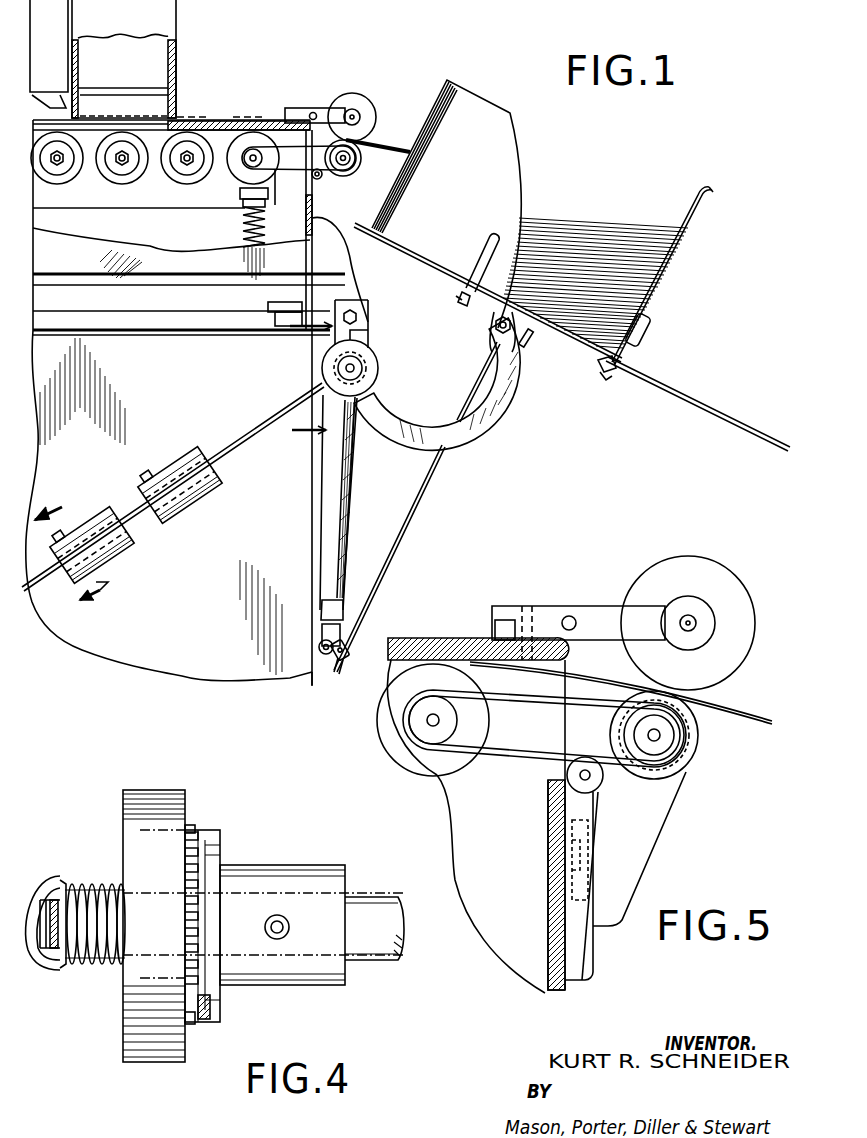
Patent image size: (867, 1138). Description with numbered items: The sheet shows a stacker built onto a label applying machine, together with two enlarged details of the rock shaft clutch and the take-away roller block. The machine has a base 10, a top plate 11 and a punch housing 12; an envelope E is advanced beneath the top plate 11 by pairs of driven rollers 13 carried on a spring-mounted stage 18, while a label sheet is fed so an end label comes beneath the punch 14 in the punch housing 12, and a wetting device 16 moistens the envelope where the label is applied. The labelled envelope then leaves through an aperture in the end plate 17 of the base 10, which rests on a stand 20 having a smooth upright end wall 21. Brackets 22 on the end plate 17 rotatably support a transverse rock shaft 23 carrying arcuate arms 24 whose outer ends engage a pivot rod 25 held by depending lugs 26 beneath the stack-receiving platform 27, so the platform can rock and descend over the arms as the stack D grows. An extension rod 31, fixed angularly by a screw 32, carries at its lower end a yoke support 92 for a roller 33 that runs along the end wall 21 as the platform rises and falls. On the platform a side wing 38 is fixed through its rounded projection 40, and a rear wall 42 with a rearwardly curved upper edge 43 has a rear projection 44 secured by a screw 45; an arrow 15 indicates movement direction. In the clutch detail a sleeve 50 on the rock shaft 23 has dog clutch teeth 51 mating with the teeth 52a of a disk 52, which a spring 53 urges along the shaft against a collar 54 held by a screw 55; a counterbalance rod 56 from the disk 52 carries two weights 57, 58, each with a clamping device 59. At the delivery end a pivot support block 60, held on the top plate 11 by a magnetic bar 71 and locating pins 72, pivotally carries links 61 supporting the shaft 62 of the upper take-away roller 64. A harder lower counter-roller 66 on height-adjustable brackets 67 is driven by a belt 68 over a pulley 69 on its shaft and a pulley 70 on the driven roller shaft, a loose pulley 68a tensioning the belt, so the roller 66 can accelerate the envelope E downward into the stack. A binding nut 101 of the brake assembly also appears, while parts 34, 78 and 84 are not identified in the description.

In FIG. 1, the base 10 is at (162, 290).
In FIG. 1, the top plate 11 is at (206, 118).
In FIG. 5, the top plate 11 is at (430, 638).
In FIG. 1, the punch housing 12 is at (152, 63).
In FIG. 1, the driven rollers 13 is at (60, 170).
In FIG. 5, the driven rollers 13 is at (400, 760).
In FIG. 1, the punch 14 is at (150, 98).
In FIG. 1, the direction arrow 15 is at (69, 555).
In FIG. 1, the wetting device 16 is at (40, 42).
In FIG. 1, the end plate 17 is at (264, 240).
In FIG. 5, the end plate 17 is at (542, 880).
In FIG. 1, the stage 18 is at (76, 197).
In FIG. 1, the cabinet or stand 20 is at (212, 680).
In FIG. 1, the upright end wall 21 is at (338, 492).
In FIG. 1, the brackets 22 is at (348, 282).
In FIG. 1, the rock shaft 23 is at (357, 368).
In FIG. 4, the rock shaft 23 is at (360, 962).
In FIG. 1, the arms 24 is at (504, 408).
In FIG. 1, the pivot rod 25 is at (492, 346).
In FIG. 1, the depending lugs 26 is at (492, 316).
In FIG. 1, the stack-receiving platform 27 is at (698, 404).
In FIG. 1, the extension rod 31 is at (438, 472).
In FIG. 1, the screw 32 is at (530, 348).
In FIG. 1, the roller 33 is at (308, 674).
In FIG. 1, the feed rod 34 is at (458, 299).
In FIG. 1, the side wing 38 is at (486, 126).
In FIG. 1, the rounded outer projections 40 is at (482, 256).
In FIG. 1, the rear wall 42 is at (664, 262).
In FIG. 1, the rearwardly curved upper edge 43 is at (705, 196).
In FIG. 1, the rear projection 44 is at (642, 342).
In FIG. 1, the screw 45 is at (608, 376).
In FIG. 4, the sleeve 50 is at (274, 880).
In FIG. 4, the dog clutch teeth 51 is at (202, 988).
In FIG. 1, the disk 52 is at (370, 348).
In FIG. 4, the disk 52 is at (150, 1064).
In FIG. 4, the dog clutch teeth 52a is at (190, 828).
In FIG. 4, the spring 53 is at (90, 968).
In FIG. 4, the collar 54 is at (42, 972).
In FIG. 4, the screw 55 is at (34, 900).
In FIG. 1, the counterbalance rod 56 is at (258, 436).
In FIG. 1, the weight 57 is at (180, 508).
In FIG. 1, the weight 58 is at (116, 548).
In FIG. 1, the clamping device 59 is at (162, 464).
In FIG. 1, the pivot support block 60 is at (289, 108).
In FIG. 5, the pivot support block 60 is at (550, 610).
In FIG. 1, the links 61 is at (314, 111).
In FIG. 5, the links 61 is at (598, 632).
In FIG. 1, the shaft 62 is at (353, 110).
In FIG. 5, the shaft 62 is at (688, 620).
In FIG. 1, the upper take-away roller 64 is at (370, 110).
In FIG. 5, the upper take-away roller 64 is at (728, 610).
In FIG. 1, the lower counter-roller 66 is at (358, 170).
In FIG. 5, the lower counter-roller 66 is at (684, 737).
In FIG. 1, the brackets 67 is at (330, 188).
In FIG. 5, the brackets 67 is at (638, 850).
In FIG. 1, the belt 68 is at (266, 180).
In FIG. 5, the belt 68 is at (610, 722).
In FIG. 5, the loose pulley 68a is at (592, 790).
In FIG. 5, the pulley 69 is at (664, 752).
In FIG. 1, the pulley 70 is at (246, 164).
In FIG. 5, the pulley 70 is at (420, 718).
In FIG. 5, the permanently magnetic bar 71 is at (496, 628).
In FIG. 5, the locating pins 72 is at (528, 606).
In FIG. 1, the piston rod 78 is at (348, 516).
In FIG. 1, the clevis 84 is at (320, 640).
In FIG. 1, the yoke support 92 is at (346, 644).
In FIG. 1, the binding nut 101 is at (356, 314).
In FIG. 1, the stack of sheets D is at (572, 248).
In FIG. 1, the envelope E is at (390, 141).
In FIG. 5, the envelope E is at (748, 704).